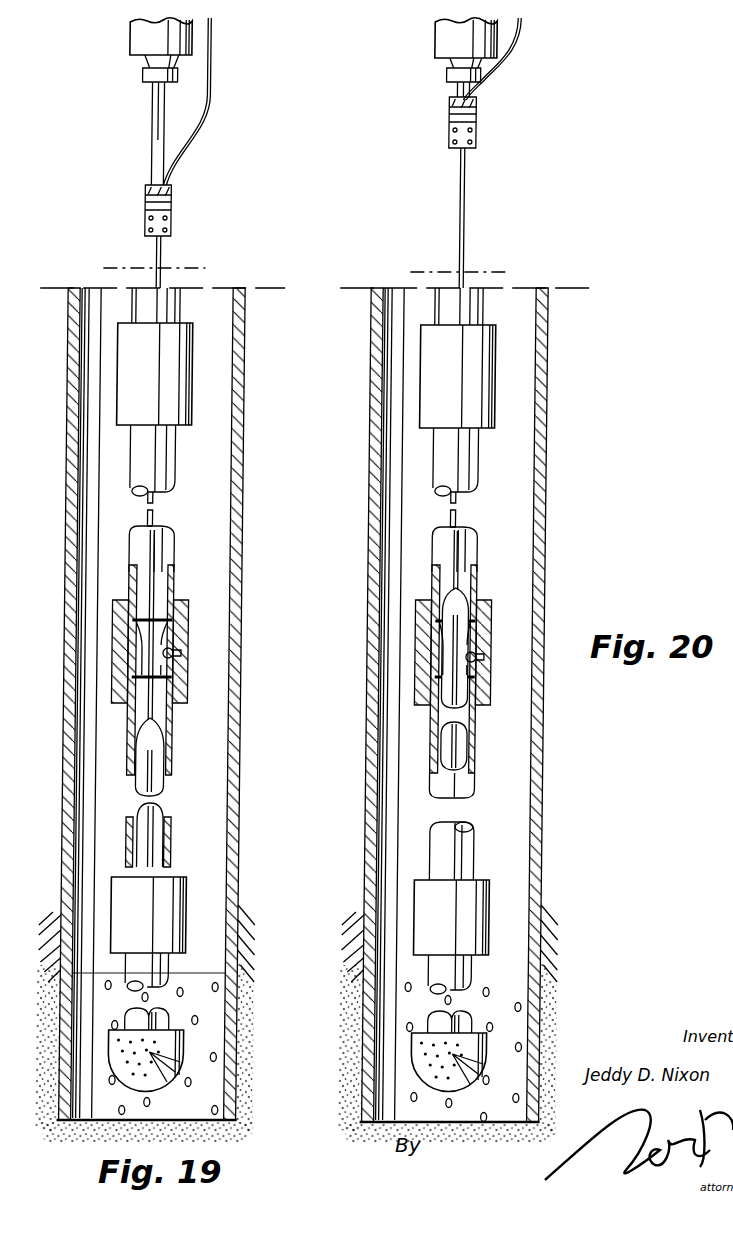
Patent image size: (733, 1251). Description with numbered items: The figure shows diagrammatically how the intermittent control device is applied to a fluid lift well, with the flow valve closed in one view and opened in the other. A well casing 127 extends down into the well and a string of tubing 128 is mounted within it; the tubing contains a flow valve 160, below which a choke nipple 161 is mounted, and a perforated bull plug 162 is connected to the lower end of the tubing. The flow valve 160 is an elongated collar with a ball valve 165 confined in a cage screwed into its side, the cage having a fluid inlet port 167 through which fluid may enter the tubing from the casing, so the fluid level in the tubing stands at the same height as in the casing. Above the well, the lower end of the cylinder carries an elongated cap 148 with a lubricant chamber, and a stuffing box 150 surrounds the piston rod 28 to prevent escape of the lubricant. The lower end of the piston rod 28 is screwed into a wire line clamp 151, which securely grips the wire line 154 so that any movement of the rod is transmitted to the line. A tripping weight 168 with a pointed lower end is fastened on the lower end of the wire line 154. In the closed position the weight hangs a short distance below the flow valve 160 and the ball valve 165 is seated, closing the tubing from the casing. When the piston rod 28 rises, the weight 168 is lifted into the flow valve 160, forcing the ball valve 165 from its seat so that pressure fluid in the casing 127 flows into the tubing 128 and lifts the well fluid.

In FIG. 19, the elongated cap 148 is at (137, 39).
In FIG. 20, the elongated cap 148 is at (440, 38).
In FIG. 19, the stuffing box 150 is at (141, 75).
In FIG. 20, the stuffing box 150 is at (436, 70).
In FIG. 19, the wire line 154 is at (209, 81).
In FIG. 20, the wire line 154 is at (507, 304).
In FIG. 19, the piston rod 28 is at (150, 140).
In FIG. 20, the piston rod 28 is at (430, 91).
In FIG. 19, the wire line clamp 151 is at (144, 210).
In FIG. 20, the wire line clamp 151 is at (492, 122).
In FIG. 19, the flow valve 160 is at (170, 376).
In FIG. 20, the flow valve 160 is at (405, 549).
In FIG. 19, the tubing 128 is at (168, 452).
In FIG. 20, the tubing 128 is at (451, 711).
In FIG. 19, the well casing 127 is at (235, 504).
In FIG. 20, the well casing 127 is at (459, 705).
In FIG. 19, the ball valve 165 is at (179, 650).
In FIG. 20, the ball valve 165 is at (497, 641).
In FIG. 19, the fluid inlet port 167 is at (186, 658).
In FIG. 20, the fluid inlet port 167 is at (504, 670).
In FIG. 19, the tripping weight 168 is at (152, 757).
In FIG. 20, the tripping weight 168 is at (516, 679).
In FIG. 19, the choke nipple 161 is at (162, 927).
In FIG. 20, the choke nipple 161 is at (400, 917).
In FIG. 19, the perforated bull plug 162 is at (167, 1050).
In FIG. 20, the perforated bull plug 162 is at (399, 1051).